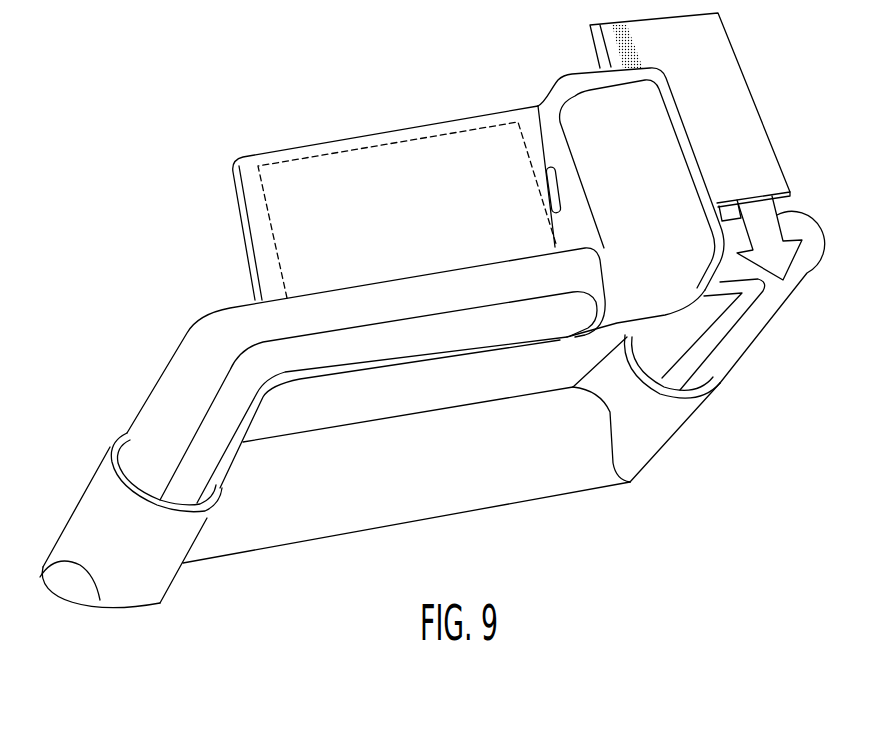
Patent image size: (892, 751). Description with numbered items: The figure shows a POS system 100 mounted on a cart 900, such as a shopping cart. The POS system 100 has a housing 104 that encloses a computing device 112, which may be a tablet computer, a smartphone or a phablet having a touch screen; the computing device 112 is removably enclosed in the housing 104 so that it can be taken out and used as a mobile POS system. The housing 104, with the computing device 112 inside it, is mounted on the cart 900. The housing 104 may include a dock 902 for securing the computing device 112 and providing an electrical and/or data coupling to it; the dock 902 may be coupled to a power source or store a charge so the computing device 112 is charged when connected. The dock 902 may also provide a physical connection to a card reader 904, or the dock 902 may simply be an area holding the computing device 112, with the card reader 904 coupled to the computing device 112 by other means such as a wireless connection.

The POS system 100 is at (182, 64).
The computing device 112 is at (418, 153).
The housing 104 is at (566, 238).
The cart 900 is at (160, 378).
The dock 902 is at (547, 167).
The card reader 904 is at (587, 97).